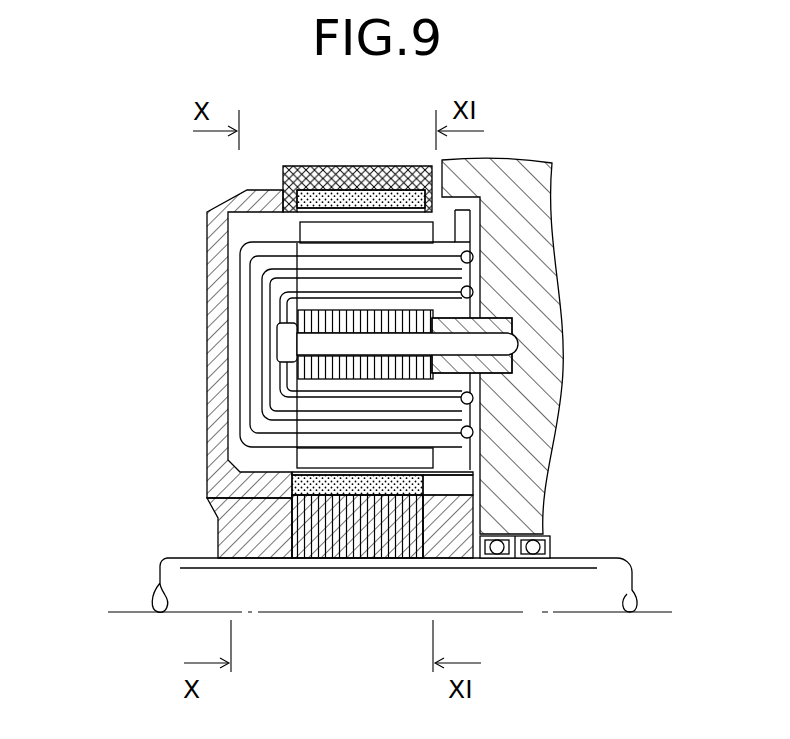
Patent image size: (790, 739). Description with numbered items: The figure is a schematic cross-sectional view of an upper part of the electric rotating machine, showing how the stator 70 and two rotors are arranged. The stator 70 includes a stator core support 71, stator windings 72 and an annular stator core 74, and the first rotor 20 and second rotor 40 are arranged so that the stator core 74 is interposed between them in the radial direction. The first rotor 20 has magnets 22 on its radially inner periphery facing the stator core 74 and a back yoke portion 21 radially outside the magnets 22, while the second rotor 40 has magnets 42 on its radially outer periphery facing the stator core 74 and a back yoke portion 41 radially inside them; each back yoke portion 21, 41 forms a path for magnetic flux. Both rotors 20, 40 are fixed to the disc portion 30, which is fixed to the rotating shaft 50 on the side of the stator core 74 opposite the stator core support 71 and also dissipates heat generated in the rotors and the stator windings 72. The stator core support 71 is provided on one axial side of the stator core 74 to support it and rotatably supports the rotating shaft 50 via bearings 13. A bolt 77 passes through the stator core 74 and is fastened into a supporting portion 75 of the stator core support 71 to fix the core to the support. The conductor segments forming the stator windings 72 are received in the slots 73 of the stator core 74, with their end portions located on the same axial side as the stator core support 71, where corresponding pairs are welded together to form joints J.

The bearings 13 is at (533, 558).
The first rotor 20 is at (102, 158).
The back yoke portion 21 is at (283, 180).
The magnets 22 is at (298, 210).
The disc portion 30 is at (217, 343).
The second rotor 40 is at (102, 463).
The back yoke portion 41 is at (290, 537).
The magnets 42 is at (290, 483).
The rotating shaft 50 is at (208, 592).
The stator 70 is at (653, 197).
The stator core support 71 is at (527, 222).
The stator windings 72 is at (470, 292).
The slots 73 is at (440, 318).
The stator core 74 is at (515, 350).
The supporting portion 75 is at (478, 382).
The bolt 77 is at (283, 347).
The joints J is at (474, 463).